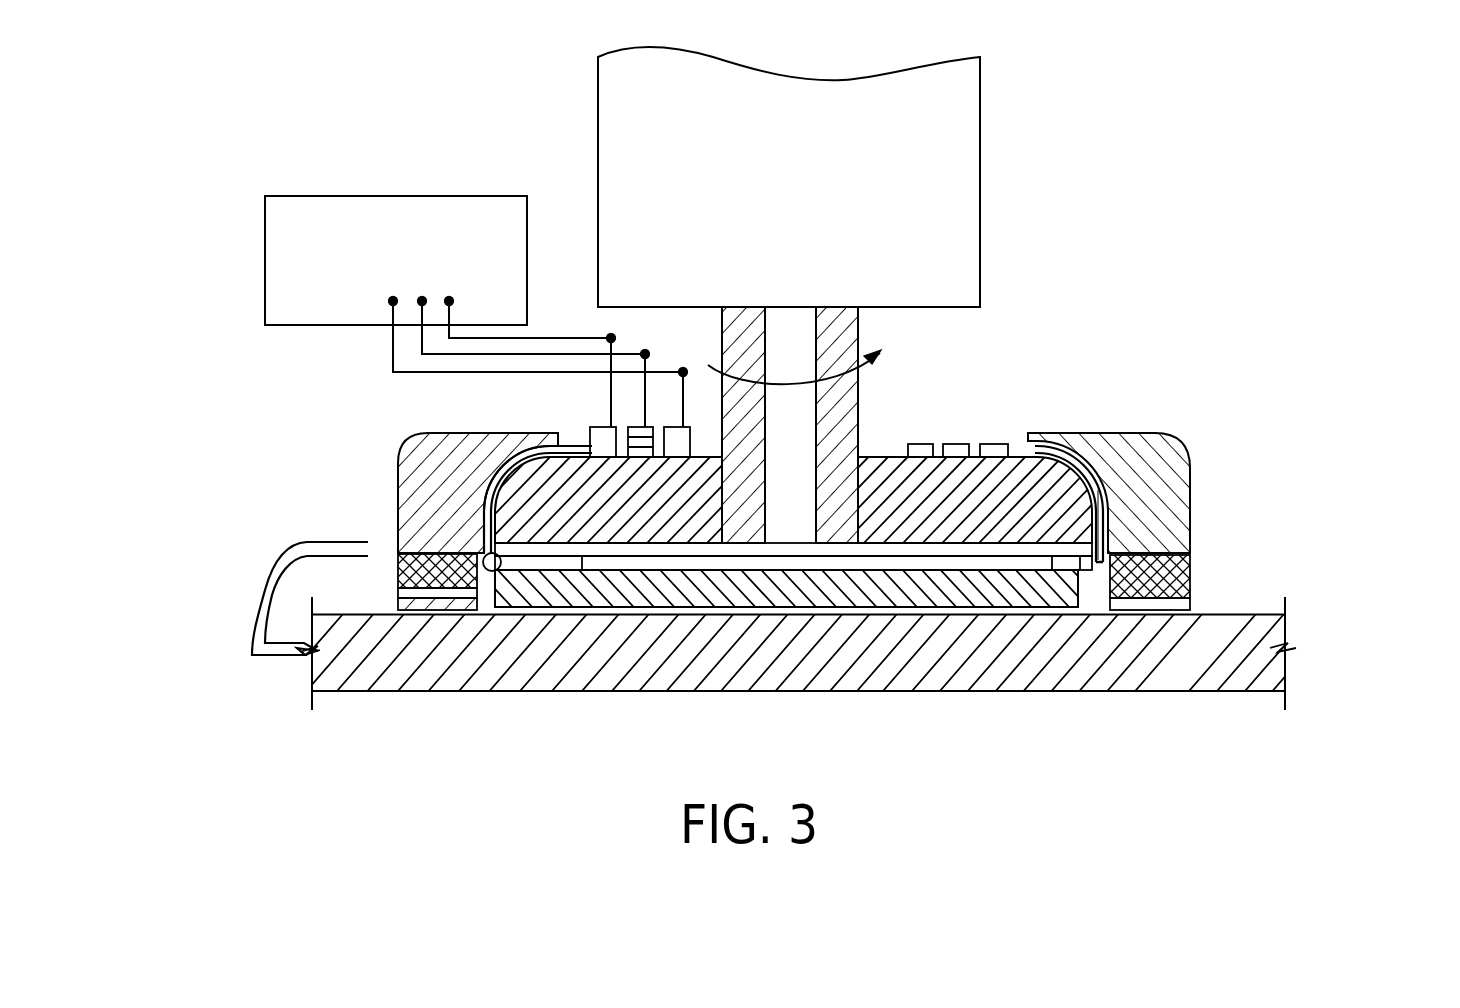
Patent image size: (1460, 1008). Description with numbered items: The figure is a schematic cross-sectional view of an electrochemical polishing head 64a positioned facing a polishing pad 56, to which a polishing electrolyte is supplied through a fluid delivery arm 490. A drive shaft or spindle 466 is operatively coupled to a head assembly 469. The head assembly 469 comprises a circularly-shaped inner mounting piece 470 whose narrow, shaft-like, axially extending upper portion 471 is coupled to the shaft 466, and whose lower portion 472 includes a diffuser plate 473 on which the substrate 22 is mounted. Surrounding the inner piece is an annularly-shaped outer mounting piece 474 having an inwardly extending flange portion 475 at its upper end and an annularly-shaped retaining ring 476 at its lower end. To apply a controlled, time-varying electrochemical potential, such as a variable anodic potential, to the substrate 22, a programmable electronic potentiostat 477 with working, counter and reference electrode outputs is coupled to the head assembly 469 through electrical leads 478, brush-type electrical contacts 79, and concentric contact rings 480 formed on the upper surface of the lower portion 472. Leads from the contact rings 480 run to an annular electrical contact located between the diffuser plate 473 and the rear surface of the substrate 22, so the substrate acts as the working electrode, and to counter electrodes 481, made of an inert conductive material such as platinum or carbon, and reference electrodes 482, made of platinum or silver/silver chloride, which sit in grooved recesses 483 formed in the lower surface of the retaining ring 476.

The substrate 22 is at (622, 600).
The pad 56 is at (436, 692).
The electrochemical polishing (ECP) head 64a is at (1163, 299).
The brush-type electrical contacts 79 is at (596, 427).
The shaft or spindle 466 is at (960, 178).
The head assembly 469 is at (1164, 432).
The inner mounting piece 470 is at (861, 408).
The upper portion 471 is at (858, 333).
The lower portion 472 is at (886, 457).
The diffuser plate 473 is at (876, 548).
The outer mounting piece 474 is at (1158, 466).
The flange portion 475 is at (845, 443).
The retaining ring 476 is at (1182, 578).
The potentiostat 477 is at (325, 196).
The electrical leads 478 is at (382, 343).
The concentric contact rings 480 is at (583, 444).
The counter electrodes 481 is at (1102, 489).
The reference electrodes 482 is at (990, 558).
The grooved recesses 483 is at (1192, 600).
The fluid delivery arm 490 is at (268, 562).